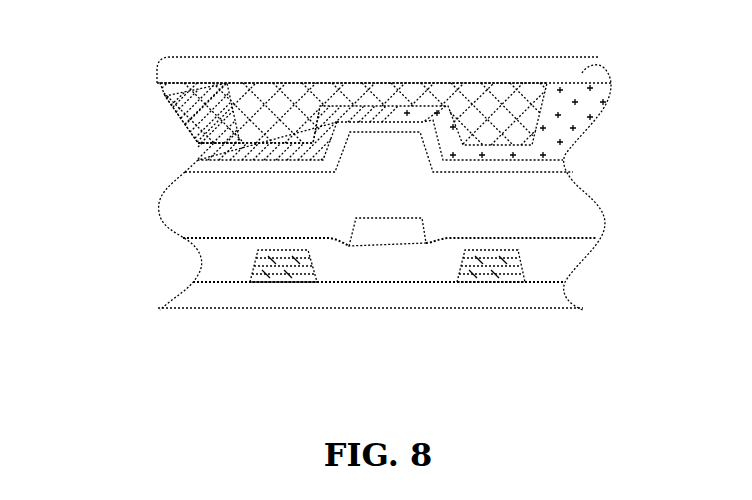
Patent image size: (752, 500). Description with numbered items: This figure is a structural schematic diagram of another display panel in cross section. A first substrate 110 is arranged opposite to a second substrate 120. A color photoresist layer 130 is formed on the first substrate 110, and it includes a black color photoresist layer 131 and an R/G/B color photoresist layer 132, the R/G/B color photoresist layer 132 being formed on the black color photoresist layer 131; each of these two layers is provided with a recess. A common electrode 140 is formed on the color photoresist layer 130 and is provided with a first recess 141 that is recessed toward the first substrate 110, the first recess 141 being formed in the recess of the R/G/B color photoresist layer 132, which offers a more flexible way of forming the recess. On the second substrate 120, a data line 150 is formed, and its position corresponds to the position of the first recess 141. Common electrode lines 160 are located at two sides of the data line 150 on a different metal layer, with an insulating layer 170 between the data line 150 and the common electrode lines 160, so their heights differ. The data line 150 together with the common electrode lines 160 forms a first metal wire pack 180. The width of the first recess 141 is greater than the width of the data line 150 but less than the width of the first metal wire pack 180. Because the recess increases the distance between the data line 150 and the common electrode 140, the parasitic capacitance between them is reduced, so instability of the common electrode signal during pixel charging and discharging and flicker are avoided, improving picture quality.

The first substrate 110 is at (607, 67).
The second substrate 120 is at (563, 300).
The color photoresist layer 130 is at (214, 121).
The black color photoresist layer 131 is at (167, 88).
The R/G/B color photoresist layer 132 is at (198, 143).
The common electrode 140 is at (567, 165).
The first recess 141 is at (416, 100).
The data line 150 is at (368, 228).
The common electrode lines 160 is at (303, 283).
The insulating layer 170 is at (223, 253).
The first metal wire pack 180 is at (387, 322).